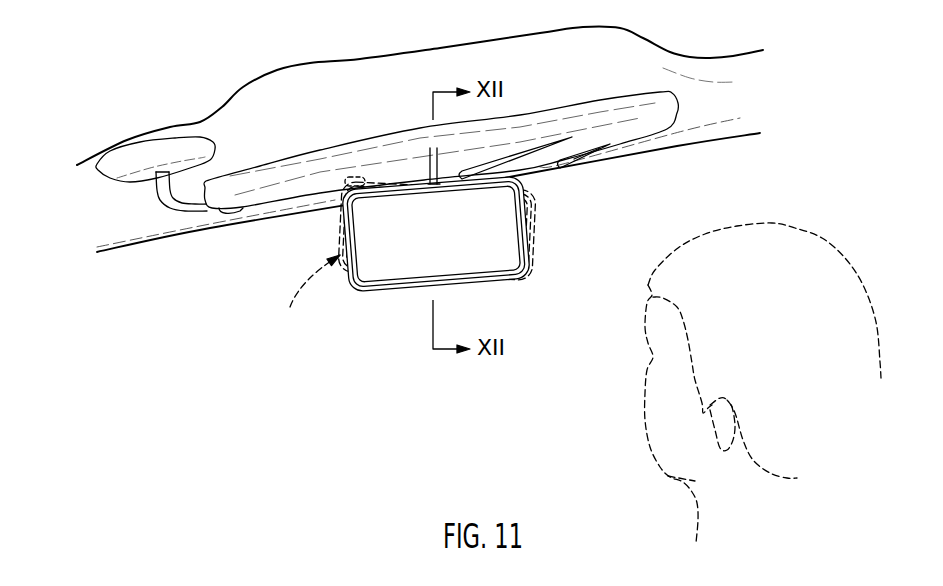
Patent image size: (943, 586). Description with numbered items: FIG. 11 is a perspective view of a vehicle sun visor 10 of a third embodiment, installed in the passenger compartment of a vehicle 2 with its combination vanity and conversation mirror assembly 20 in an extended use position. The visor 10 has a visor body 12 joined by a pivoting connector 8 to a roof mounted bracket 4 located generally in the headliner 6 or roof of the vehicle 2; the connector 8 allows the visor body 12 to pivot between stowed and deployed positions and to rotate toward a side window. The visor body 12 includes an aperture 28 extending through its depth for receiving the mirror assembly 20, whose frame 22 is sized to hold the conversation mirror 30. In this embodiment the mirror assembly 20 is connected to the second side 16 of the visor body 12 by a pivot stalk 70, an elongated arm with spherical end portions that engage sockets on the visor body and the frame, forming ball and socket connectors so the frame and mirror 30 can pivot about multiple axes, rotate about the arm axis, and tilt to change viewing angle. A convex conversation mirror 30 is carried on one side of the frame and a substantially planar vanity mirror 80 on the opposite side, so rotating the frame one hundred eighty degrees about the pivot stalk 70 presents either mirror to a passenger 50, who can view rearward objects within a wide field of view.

The vehicle 2 is at (122, 258).
The roof mounted bracket 4 is at (177, 148).
The headliner 6 is at (195, 224).
The pivoting connector 8 is at (170, 210).
The vehicle sun visor 10 is at (288, 107).
The visor body 12 is at (417, 130).
The second side 16 is at (283, 196).
The combination vanity and conversation mirror assembly 20 is at (403, 253).
The frame 22 is at (373, 293).
The aperture 28 is at (507, 152).
The conversation mirror 30 is at (397, 257).
The passenger 50 is at (785, 223).
The pivot stalk 70 is at (455, 186).
The vanity mirror 80 is at (512, 277).